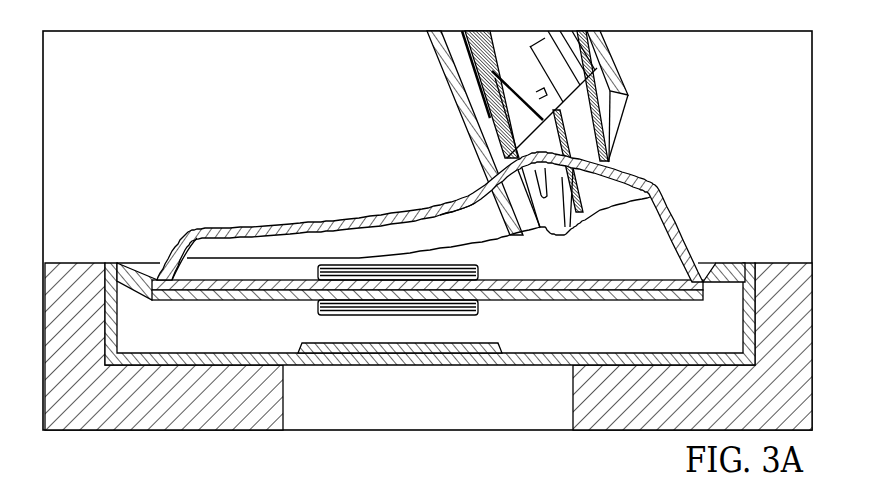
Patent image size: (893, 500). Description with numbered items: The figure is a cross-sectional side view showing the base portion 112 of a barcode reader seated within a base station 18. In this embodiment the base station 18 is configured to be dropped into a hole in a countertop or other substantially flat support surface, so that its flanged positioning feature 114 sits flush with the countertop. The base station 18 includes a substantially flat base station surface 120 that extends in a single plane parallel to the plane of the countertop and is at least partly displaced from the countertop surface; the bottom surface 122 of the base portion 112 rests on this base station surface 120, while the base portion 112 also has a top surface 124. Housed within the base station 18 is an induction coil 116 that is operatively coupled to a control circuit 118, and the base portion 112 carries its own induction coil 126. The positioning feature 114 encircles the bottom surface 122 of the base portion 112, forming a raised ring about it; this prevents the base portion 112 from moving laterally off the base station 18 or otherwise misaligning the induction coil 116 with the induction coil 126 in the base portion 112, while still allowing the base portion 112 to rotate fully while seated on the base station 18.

The base station 18 is at (712, 333).
The base portion 112 is at (633, 173).
The flanged positioning feature 114 is at (130, 297).
The induction coil 116 is at (472, 315).
The control circuit 118 is at (150, 499).
The base station surface 120 is at (590, 280).
The bottom surface 122 is at (216, 305).
The top surface 124 is at (484, 203).
The induction coil 126 is at (397, 264).